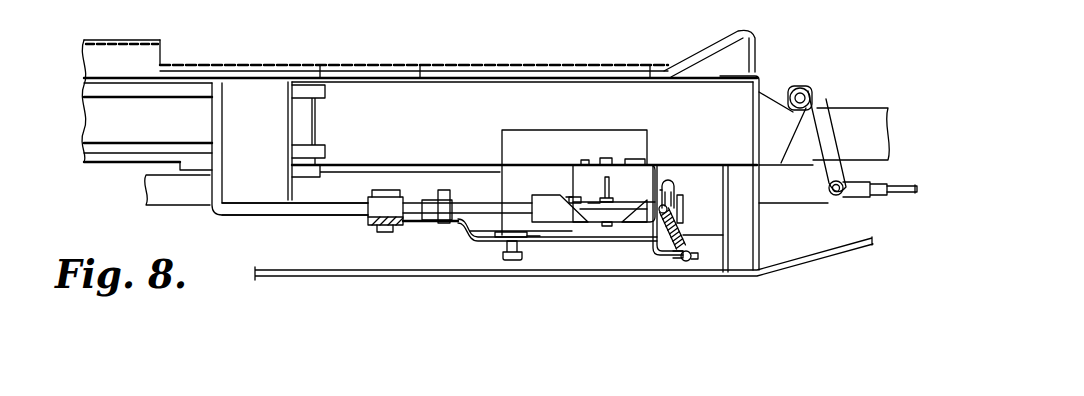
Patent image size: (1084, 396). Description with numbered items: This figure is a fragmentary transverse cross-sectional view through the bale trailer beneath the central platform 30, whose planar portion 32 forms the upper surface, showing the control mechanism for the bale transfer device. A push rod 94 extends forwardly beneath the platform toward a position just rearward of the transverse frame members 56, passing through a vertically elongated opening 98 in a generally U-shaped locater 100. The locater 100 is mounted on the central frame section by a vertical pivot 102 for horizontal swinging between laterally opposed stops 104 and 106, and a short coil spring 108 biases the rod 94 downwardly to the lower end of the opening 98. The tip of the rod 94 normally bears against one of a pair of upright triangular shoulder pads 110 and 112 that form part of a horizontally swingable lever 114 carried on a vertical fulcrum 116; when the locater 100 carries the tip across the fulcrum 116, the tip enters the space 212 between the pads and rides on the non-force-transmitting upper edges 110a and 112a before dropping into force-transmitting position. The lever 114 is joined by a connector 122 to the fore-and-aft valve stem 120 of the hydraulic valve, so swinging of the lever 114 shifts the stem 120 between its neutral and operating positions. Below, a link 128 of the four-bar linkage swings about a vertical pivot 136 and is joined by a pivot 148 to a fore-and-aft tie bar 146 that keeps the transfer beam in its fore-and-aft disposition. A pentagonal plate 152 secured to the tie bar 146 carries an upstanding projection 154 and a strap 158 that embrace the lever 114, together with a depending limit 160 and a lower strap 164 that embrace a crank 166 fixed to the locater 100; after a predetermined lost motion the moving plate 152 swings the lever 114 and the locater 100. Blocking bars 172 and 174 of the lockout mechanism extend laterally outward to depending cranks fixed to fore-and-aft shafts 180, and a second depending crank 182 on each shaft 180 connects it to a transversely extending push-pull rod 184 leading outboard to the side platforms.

The central platform 30 is at (476, 62).
The planar portion 32 is at (344, 63).
The transverse frame member 56 is at (872, 113).
The push rod 94 is at (676, 217).
The vertically elongated opening 98 is at (676, 190).
The locater 100 is at (662, 159).
The vertical pivot 102 is at (606, 158).
The stop 104 is at (630, 159).
The stop 106 is at (583, 160).
The coil spring 108 is at (686, 241).
The shoulder pad 110 is at (560, 223).
The upper edge 110a is at (543, 196).
The shoulder pad 112 is at (645, 220).
The upper edge 112a is at (668, 195).
The lever 114 is at (478, 239).
The vertical fulcrum 116 is at (612, 197).
The valve stem 120 is at (582, 196).
The connector 122 is at (572, 196).
The link 128 is at (100, 115).
The vertical pivot 136 is at (294, 175).
The tie bar 146 is at (368, 219).
The pivot 148 is at (377, 190).
The pentagonal plate 152 is at (461, 234).
The upstanding projection 154 is at (451, 207).
The strap 158 is at (433, 189).
The depending limit 160 is at (508, 260).
The strap 164 is at (515, 258).
The crank 166 is at (545, 244).
The blocking bar 172 is at (155, 191).
The blocking bar 174 is at (802, 198).
The shaft 180 is at (804, 89).
The second depending crank 182 is at (826, 134).
The push-pull rod 184 is at (908, 195).
The space 212 is at (613, 224).